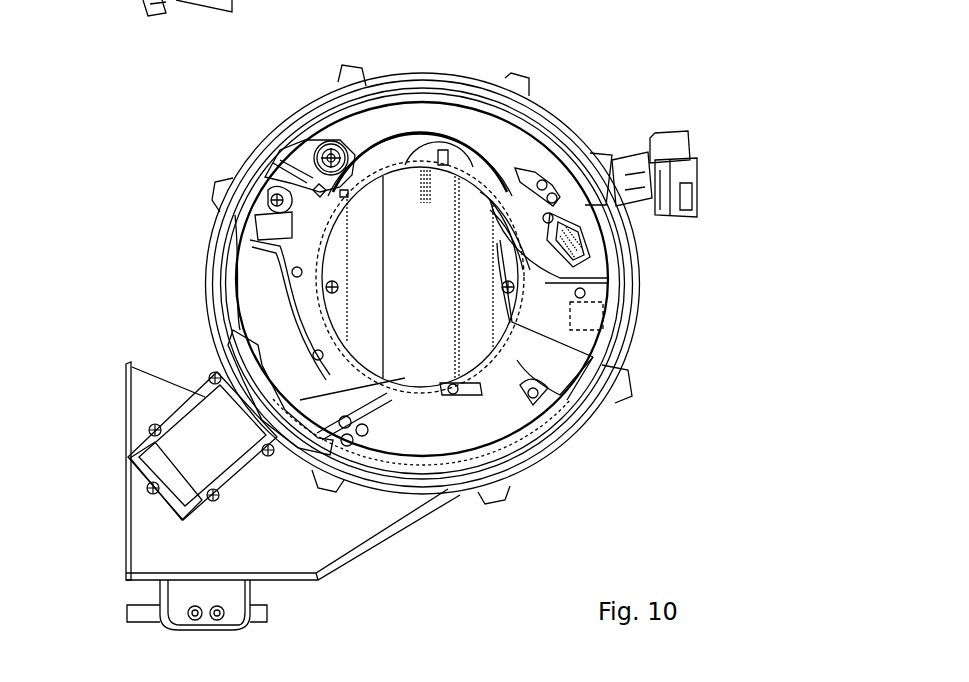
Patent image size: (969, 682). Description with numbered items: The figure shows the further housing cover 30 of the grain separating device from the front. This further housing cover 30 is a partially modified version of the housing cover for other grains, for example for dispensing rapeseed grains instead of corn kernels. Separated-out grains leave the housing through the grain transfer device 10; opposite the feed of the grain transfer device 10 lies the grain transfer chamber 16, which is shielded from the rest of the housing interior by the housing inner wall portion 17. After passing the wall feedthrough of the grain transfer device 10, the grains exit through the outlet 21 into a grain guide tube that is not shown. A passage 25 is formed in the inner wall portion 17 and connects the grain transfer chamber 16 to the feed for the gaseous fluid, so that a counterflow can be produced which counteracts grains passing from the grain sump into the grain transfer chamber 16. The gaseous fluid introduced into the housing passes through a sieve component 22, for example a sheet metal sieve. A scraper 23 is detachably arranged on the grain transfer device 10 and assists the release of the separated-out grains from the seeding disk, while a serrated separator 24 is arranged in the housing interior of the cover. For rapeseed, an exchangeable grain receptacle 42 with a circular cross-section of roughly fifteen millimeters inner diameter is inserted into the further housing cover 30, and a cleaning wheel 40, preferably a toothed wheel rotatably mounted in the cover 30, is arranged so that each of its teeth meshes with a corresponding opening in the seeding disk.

The grain transfer device 10 is at (694, 122).
The grain transfer chamber 16 is at (360, 153).
The housing inner wall portion 17 is at (478, 183).
The outlet 21 is at (700, 183).
The sieve component 22 is at (395, 197).
The scraper 23 is at (527, 150).
The serrated separator 24 is at (260, 347).
The passage 25 is at (440, 163).
The further housing cover 30 is at (570, 438).
The cleaning wheel 40 is at (580, 235).
The grain receptacle 42 is at (570, 280).